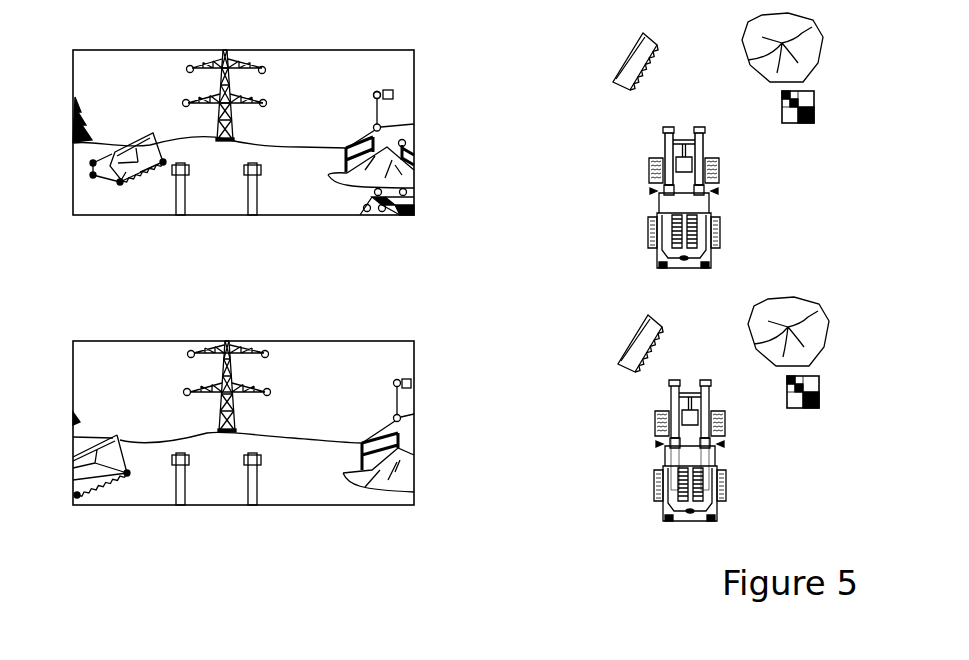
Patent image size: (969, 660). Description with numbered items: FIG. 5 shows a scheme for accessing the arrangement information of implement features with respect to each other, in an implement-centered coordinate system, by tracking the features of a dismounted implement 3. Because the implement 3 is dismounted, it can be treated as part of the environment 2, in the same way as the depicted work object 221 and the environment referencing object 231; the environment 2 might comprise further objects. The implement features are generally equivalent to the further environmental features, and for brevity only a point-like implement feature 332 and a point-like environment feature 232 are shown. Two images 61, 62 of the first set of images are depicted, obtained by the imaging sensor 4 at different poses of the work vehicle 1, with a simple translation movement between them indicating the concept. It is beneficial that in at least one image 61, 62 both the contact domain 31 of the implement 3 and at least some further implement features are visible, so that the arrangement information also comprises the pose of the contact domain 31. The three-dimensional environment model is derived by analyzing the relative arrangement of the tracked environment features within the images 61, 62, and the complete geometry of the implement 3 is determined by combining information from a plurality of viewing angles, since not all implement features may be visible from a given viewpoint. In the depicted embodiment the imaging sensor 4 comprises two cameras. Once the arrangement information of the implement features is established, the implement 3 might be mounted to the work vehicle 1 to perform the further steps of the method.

The work vehicle 1 is at (639, 155).
The environment 2 is at (375, 70).
The implement 3 is at (143, 137).
The imaging sensor 4 is at (665, 197).
The contact domain 31 is at (132, 183).
The image 61 is at (298, 50).
The image 62 is at (298, 340).
The work object 221 is at (740, 52).
The environment referencing object 231 is at (785, 123).
The environment feature 232 is at (381, 93).
The implement feature 332 is at (118, 184).